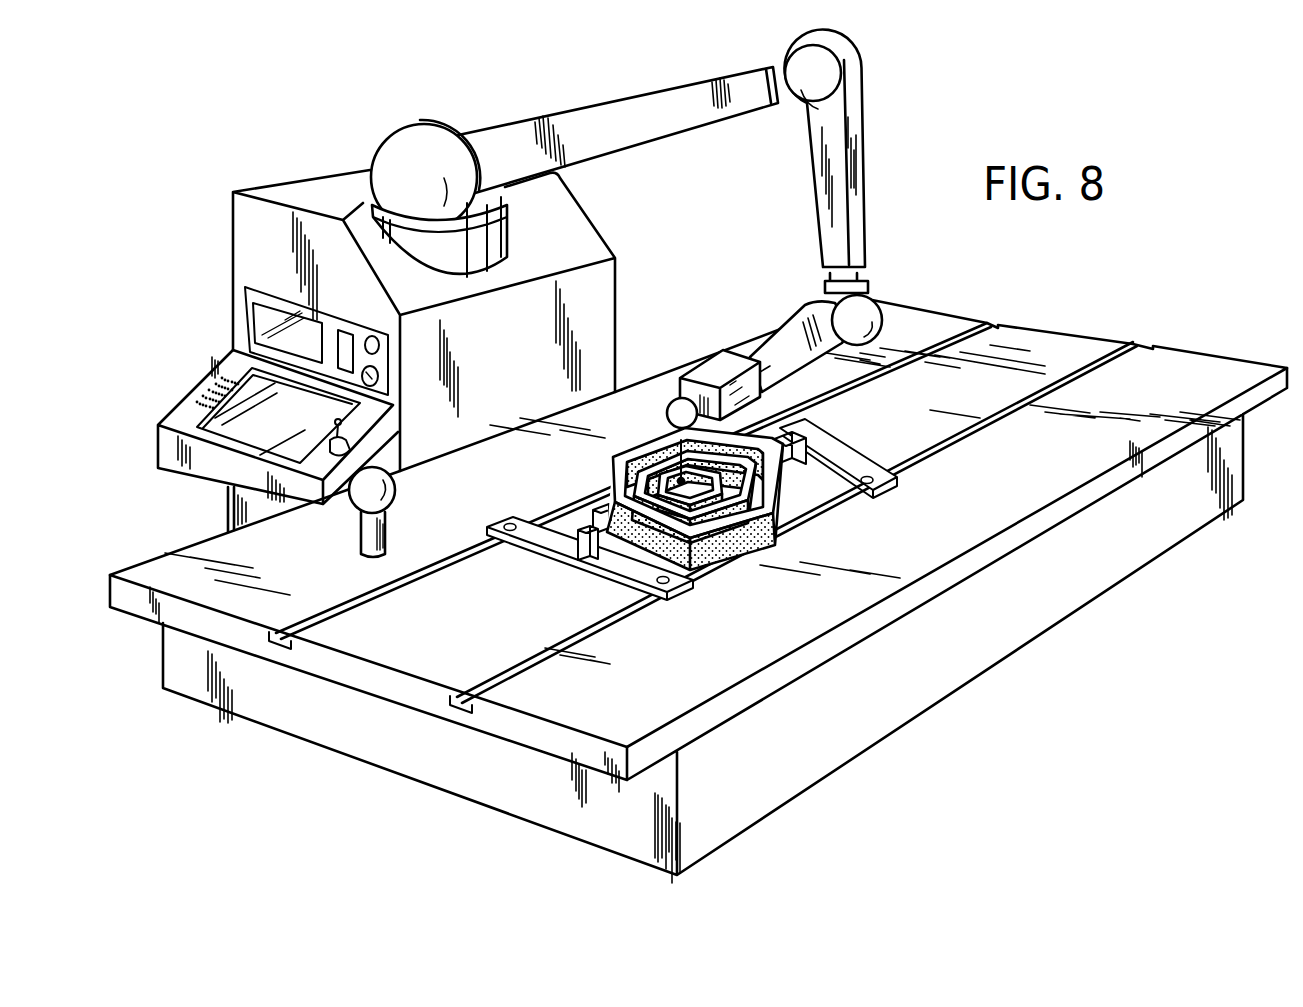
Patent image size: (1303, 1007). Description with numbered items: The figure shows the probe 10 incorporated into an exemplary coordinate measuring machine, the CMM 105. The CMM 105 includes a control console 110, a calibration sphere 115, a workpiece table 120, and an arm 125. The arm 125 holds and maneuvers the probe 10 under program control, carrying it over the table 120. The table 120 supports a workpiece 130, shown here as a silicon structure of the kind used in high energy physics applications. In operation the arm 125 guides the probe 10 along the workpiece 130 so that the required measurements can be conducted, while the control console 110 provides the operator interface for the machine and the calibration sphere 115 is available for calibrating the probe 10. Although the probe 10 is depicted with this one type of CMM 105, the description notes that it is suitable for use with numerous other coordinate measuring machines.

The probe 10 is at (663, 436).
The CMM 105 is at (520, 293).
The control console 110 is at (515, 378).
The calibration sphere 115 is at (396, 490).
The workpiece table 120 is at (745, 648).
The arm 125 is at (614, 115).
The workpiece 130 is at (788, 492).